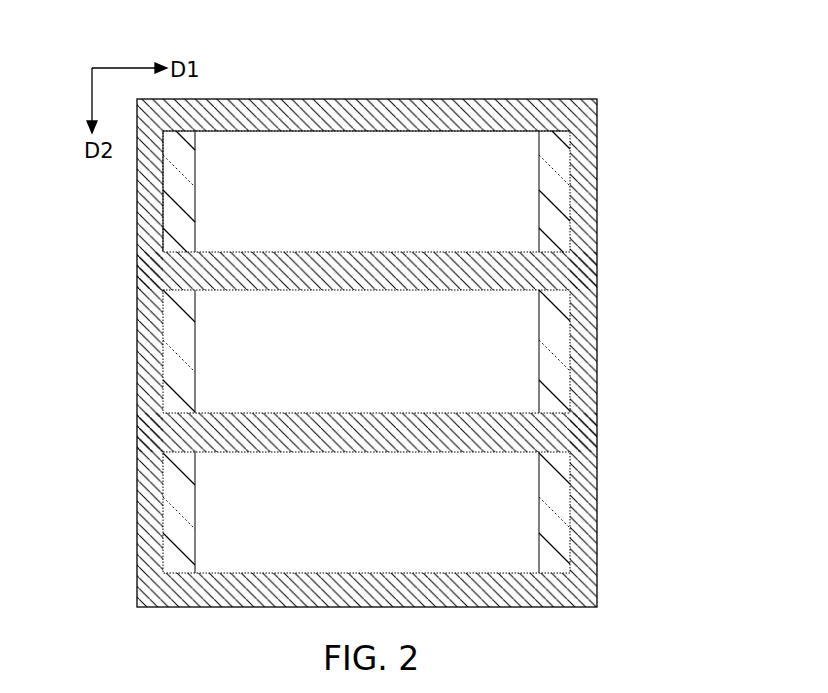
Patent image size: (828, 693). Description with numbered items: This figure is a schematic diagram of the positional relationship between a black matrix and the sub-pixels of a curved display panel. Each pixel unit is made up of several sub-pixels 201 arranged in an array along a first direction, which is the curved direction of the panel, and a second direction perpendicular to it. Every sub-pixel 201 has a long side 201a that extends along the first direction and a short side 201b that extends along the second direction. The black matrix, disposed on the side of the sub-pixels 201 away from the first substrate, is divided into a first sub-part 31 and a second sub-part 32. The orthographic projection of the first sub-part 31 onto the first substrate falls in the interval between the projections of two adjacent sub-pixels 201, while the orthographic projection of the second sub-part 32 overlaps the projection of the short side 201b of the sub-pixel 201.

The first sub-part 31 is at (547, 172).
The second sub-part 32 is at (562, 268).
The sub-pixel 201 is at (512, 213).
The long side 201a is at (358, 121).
The short side 201b is at (151, 187).